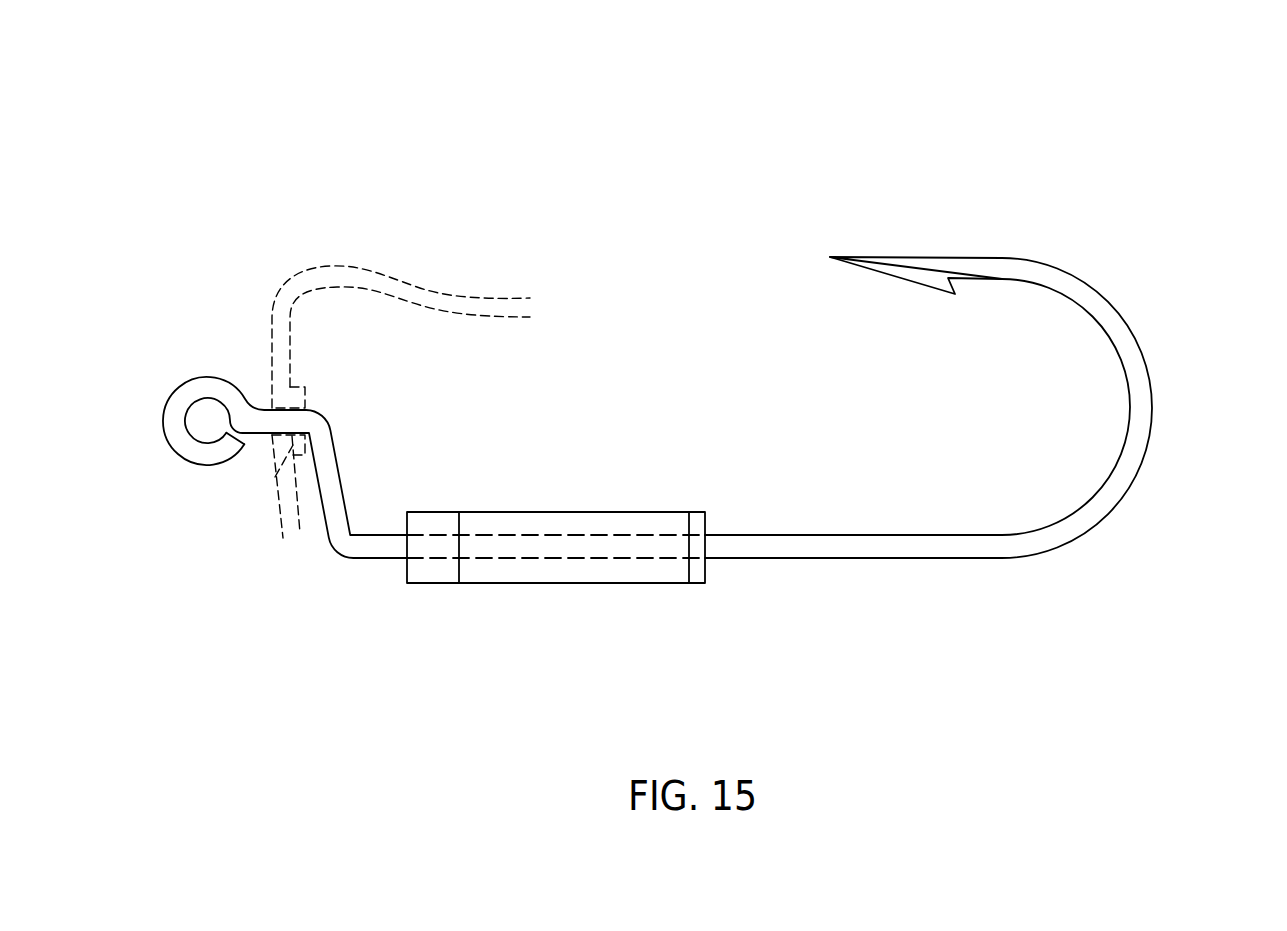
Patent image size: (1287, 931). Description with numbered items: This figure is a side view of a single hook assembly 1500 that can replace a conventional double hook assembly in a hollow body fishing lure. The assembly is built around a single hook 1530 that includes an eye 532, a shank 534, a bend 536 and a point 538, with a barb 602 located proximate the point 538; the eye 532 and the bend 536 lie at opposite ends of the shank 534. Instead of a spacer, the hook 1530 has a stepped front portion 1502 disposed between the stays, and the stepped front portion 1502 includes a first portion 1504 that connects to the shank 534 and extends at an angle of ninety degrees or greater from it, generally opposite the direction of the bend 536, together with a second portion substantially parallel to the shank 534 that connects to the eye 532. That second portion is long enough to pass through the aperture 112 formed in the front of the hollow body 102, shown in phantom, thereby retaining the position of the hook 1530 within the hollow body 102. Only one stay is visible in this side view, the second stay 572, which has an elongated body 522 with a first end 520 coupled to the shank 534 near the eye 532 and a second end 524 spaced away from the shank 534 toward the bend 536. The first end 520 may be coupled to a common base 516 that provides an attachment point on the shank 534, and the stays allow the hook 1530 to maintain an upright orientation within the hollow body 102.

The single hook assembly 1500 is at (912, 108).
The hollow body 102 is at (350, 263).
The aperture 112 is at (293, 445).
The eye 532 is at (208, 390).
The stepped front portion 1502 is at (337, 463).
The first portion 1504 is at (333, 503).
The base 516 is at (433, 570).
The first end 520 is at (594, 554).
The elongated body 522 is at (572, 523).
The second end 524 is at (707, 522).
The second stay 572 is at (593, 568).
The shank 534 is at (837, 547).
The bend 536 is at (1152, 407).
The point 538 is at (916, 280).
The barb 602 is at (943, 290).
The single hook 1530 is at (706, 426).